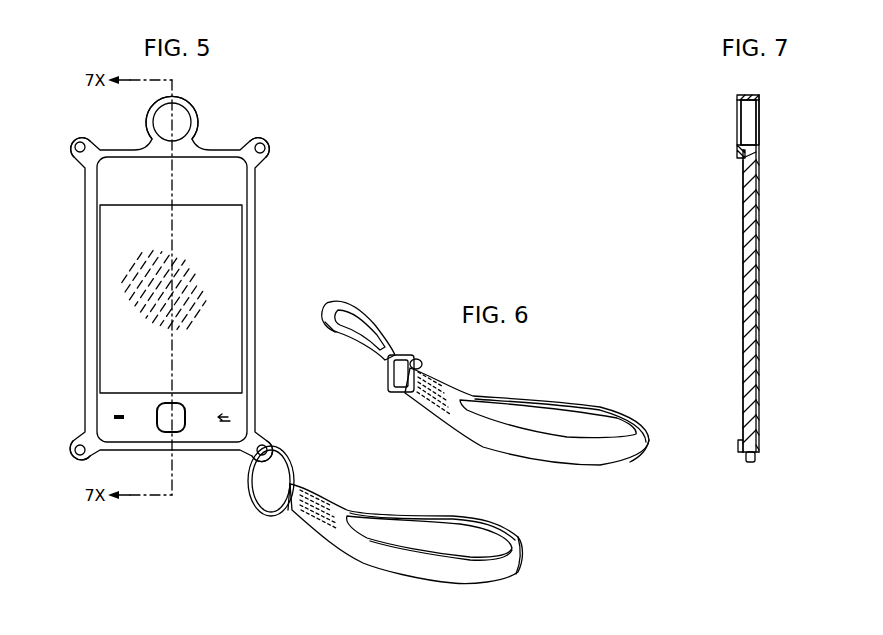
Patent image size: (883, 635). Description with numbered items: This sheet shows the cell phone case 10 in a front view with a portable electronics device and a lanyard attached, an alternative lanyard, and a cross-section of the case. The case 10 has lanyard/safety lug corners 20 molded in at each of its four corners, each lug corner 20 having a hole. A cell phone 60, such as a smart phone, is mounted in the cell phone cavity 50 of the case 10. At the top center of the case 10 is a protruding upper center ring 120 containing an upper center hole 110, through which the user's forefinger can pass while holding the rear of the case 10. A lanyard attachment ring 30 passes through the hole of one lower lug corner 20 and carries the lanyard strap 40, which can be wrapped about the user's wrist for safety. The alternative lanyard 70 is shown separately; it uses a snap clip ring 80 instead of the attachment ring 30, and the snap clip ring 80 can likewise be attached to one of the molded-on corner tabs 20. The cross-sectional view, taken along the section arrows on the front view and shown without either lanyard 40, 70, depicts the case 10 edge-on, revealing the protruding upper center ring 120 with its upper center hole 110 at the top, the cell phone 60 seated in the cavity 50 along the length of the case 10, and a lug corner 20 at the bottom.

In FIG. 5, the cell phone case 10 is at (207, 152).
In FIG. 5, the lanyard/safety lug corners 20 is at (171, 290).
In FIG. 7, the lanyard/safety lug corners 20 is at (722, 468).
In FIG. 5, the lanyard attachment ring 30 is at (244, 499).
In FIG. 5, the lanyard strap 40 is at (405, 538).
In FIG. 7, the cell phone cavity 50 is at (787, 273).
In FIG. 5, the cell phone 60 is at (215, 299).
In FIG. 7, the cell phone 60 is at (707, 306).
In FIG. 6, the lanyard with alternate snap clip attachment 70 is at (423, 425).
In FIG. 6, the snap clip ring 80 is at (371, 312).
In FIG. 5, the upper center hole 110 is at (137, 116).
In FIG. 7, the upper center hole 110 is at (737, 126).
In FIG. 5, the protruding upper center ring 120 is at (198, 102).
In FIG. 7, the protruding upper center ring 120 is at (713, 113).